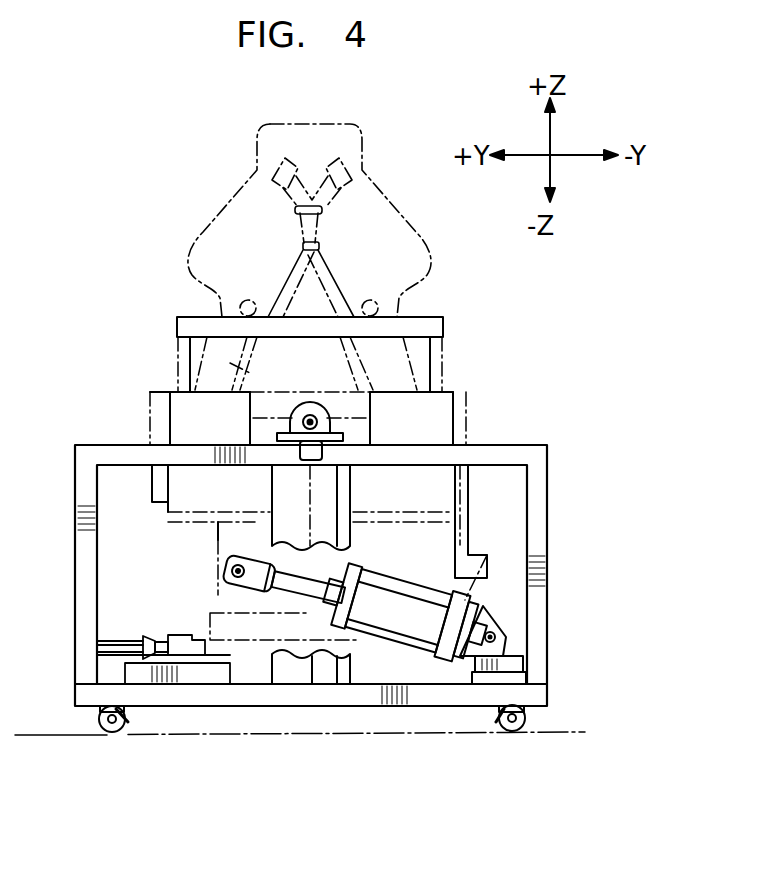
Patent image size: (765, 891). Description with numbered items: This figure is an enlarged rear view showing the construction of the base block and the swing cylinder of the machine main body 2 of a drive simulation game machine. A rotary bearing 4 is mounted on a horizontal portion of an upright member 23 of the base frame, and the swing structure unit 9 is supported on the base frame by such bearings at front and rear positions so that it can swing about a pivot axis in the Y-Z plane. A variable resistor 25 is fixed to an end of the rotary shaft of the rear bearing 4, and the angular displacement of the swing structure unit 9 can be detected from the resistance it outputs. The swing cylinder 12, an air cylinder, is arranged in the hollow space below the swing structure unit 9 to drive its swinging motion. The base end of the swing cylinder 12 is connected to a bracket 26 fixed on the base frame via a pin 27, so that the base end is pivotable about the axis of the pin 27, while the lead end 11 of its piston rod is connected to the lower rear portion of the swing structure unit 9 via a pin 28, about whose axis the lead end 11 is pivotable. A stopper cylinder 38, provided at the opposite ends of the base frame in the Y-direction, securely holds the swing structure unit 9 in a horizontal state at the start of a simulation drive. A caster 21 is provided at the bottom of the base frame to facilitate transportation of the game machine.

The main body 2 is at (290, 692).
The rotary bearing 4 is at (320, 404).
The swing structure unit 9 is at (196, 560).
The lead end 11 is at (250, 584).
The swing cylinder 12 is at (398, 622).
The caster 21 is at (120, 733).
The upright member 23 is at (552, 534).
The variable resistor 25 is at (297, 407).
The bracket 26 is at (507, 661).
The pin 27 is at (506, 634).
The pin 28 is at (232, 582).
The stopper cylinder 38 is at (118, 652).